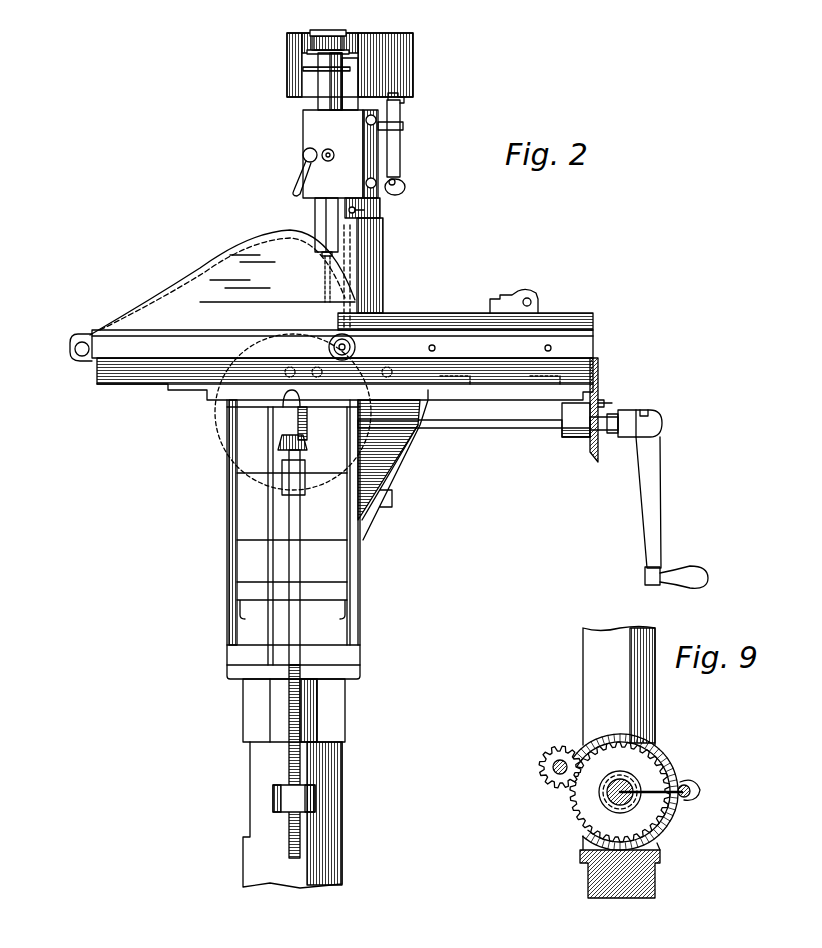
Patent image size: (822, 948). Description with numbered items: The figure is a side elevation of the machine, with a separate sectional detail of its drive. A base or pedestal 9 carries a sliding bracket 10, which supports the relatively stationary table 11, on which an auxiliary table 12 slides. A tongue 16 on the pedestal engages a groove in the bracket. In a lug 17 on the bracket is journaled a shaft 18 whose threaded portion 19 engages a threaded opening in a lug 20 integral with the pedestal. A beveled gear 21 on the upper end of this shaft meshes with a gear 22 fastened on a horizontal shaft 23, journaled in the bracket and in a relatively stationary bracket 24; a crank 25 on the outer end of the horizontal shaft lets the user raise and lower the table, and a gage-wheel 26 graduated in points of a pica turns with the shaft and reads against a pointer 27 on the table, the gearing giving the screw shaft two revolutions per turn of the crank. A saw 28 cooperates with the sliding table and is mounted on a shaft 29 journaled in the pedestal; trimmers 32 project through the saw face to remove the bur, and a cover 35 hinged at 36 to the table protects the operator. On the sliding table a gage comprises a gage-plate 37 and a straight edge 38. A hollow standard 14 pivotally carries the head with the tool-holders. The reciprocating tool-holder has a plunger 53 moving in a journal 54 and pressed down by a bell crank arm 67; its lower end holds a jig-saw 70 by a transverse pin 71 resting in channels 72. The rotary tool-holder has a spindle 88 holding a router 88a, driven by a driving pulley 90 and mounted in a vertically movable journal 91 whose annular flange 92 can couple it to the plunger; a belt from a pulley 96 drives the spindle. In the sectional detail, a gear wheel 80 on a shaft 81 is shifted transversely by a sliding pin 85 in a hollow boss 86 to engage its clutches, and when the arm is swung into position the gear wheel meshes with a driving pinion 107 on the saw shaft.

In FIG. 2, the base or pedestal 9 is at (340, 862).
In FIG. 2, the sliding bracket 10 is at (357, 648).
In FIG. 2, the relatively stationary table 11 is at (150, 378).
In FIG. 2, the auxiliary table 12 is at (580, 339).
In FIG. 2, the hollow standard 14 is at (380, 252).
In FIG. 9, the hollow standard 14 is at (605, 671).
In FIG. 2, the tongue 16 is at (338, 726).
In FIG. 2, the lug 17 is at (236, 560).
In FIG. 2, the shaft 18 is at (300, 575).
In FIG. 2, the threaded portion 19 is at (302, 832).
In FIG. 2, the lug 20 is at (312, 794).
In FIG. 2, the beveled gear 21 is at (290, 441).
In FIG. 2, the gear 22 is at (290, 423).
In FIG. 2, the horizontal shaft 23 is at (508, 428).
In FIG. 2, the relatively stationary bracket 24 is at (578, 437).
In FIG. 2, the crank 25 is at (657, 490).
In FIG. 2, the gage-wheel 26 is at (597, 448).
In FIG. 2, the pointer 27 is at (598, 383).
In FIG. 2, the saw 28 is at (282, 343).
In FIG. 9, the shaft 29 is at (557, 776).
In FIG. 2, the trimmers 32 is at (245, 345).
In FIG. 2, the cover 35 is at (260, 250).
In FIG. 2, the hinge 36 is at (76, 347).
In FIG. 2, the gage-plate 37 is at (578, 312).
In FIG. 2, the straight edge 38 is at (418, 322).
In FIG. 2, the plunger 53 is at (352, 80).
In FIG. 2, the journal 54 is at (396, 100).
In FIG. 2, the bell crank arm 67 is at (394, 148).
In FIG. 2, the jig-saw 70 is at (352, 285).
In FIG. 2, the transverse pin 71 is at (380, 213).
In FIG. 2, the channels 72 is at (382, 201).
In FIG. 9, the gear wheel 80 is at (592, 803).
In FIG. 9, the shaft 81 is at (625, 786).
In FIG. 9, the sliding pin 85 is at (690, 797).
In FIG. 9, the hollow boss 86 is at (691, 786).
In FIG. 2, the spindle 88 is at (318, 222).
In FIG. 2, the router 88a is at (327, 282).
In FIG. 2, the driving pulley 90 is at (335, 34).
In FIG. 2, the journal 91 is at (318, 96).
In FIG. 2, the annular flange 92 is at (303, 69).
In FIG. 2, the pulley 96 is at (410, 46).
In FIG. 9, the driving pinion 107 is at (555, 770).